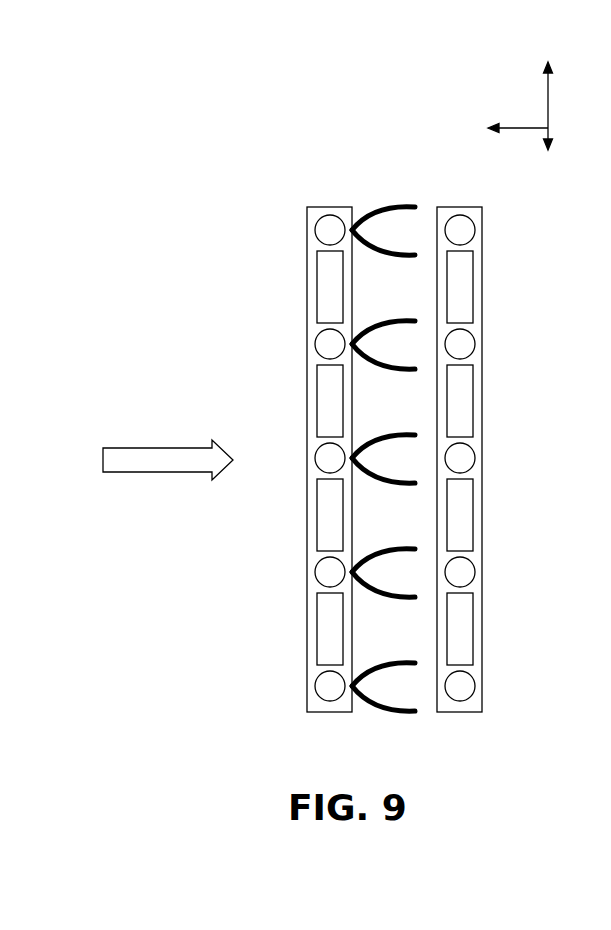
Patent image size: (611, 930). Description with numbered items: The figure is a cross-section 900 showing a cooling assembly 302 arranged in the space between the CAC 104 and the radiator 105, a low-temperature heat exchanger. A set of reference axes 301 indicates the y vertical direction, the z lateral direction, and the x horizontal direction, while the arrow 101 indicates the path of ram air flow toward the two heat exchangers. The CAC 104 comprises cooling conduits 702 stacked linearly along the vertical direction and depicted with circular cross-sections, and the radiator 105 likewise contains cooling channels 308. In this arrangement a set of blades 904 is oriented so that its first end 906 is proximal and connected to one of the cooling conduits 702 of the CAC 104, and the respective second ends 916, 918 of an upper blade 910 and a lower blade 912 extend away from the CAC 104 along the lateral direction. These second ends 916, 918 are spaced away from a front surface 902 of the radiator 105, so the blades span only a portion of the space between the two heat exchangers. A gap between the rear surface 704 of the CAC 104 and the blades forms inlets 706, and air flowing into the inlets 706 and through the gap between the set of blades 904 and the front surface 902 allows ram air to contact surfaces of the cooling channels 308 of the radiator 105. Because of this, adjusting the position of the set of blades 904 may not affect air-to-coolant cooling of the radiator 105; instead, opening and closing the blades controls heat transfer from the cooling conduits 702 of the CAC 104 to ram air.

The cross-section 900 is at (257, 98).
The cooling assembly 302 is at (361, 141).
The reference axes 301 is at (496, 69).
The CAC 104 is at (273, 204).
The radiator 105 is at (524, 204).
The inlets 706 is at (431, 202).
The first end 906 is at (352, 228).
The rear surface 704 is at (352, 283).
The second end 918 is at (418, 257).
The cooling conduits 702 is at (316, 340).
The front surface 902 is at (436, 328).
The cooling channel 308 is at (482, 347).
The second end 916 is at (410, 428).
The set of blades 904 is at (412, 464).
The upper blade 910 is at (388, 553).
The lower blade 912 is at (395, 598).
The arrow 101 is at (182, 472).